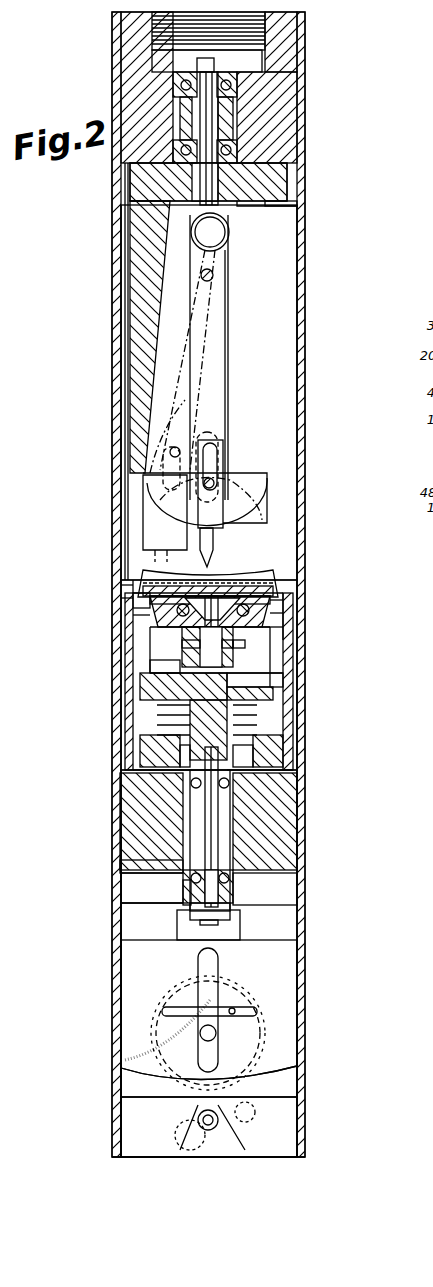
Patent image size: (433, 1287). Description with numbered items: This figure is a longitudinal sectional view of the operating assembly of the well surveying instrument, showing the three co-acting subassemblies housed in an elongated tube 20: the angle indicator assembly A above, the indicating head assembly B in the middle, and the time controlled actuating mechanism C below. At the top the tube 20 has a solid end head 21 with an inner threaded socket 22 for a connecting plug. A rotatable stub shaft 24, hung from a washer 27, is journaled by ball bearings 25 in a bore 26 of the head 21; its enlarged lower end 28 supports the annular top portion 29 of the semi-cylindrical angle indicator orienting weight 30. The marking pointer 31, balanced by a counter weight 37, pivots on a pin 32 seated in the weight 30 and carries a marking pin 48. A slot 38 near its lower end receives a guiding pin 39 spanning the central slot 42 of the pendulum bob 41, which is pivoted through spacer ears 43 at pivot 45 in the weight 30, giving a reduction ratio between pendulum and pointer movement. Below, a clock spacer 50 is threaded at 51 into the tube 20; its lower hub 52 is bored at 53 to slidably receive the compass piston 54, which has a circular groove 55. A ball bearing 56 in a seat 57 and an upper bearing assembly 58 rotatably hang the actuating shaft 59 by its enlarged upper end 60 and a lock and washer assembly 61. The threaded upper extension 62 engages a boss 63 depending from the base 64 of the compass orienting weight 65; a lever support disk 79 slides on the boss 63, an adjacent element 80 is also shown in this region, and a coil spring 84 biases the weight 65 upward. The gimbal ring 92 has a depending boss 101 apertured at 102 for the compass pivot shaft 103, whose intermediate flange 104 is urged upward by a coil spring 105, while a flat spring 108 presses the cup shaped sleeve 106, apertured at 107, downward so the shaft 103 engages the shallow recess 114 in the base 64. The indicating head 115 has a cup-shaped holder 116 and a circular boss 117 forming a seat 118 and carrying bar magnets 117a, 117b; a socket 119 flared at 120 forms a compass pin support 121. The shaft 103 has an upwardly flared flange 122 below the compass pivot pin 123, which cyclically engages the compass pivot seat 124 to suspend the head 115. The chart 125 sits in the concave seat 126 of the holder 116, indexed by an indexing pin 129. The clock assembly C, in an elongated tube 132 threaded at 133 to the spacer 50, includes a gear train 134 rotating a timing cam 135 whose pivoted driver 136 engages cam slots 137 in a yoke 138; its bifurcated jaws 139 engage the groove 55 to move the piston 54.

The elongated tube 20 is at (112, 265).
The end head 21 is at (305, 122).
The inner threaded socket 22 is at (305, 45).
The rotatable stub shaft 24 is at (305, 95).
The ball bearings 25 is at (343, 157).
The bore 26 is at (305, 138).
The washer 27 is at (197, 65).
The enlarged lower end 28 is at (305, 203).
The annular top portion 29 is at (305, 183).
The angle indicator orienting weight 30 is at (128, 185).
The marking pointer 31 is at (228, 380).
The pin 32 is at (214, 276).
The counter weight 37 is at (228, 232).
The vertically extending slot 38 is at (216, 465).
The pointer guiding pin 39 is at (212, 482).
The pendulum bob 41 is at (150, 483).
The central slot 42 is at (240, 510).
The spacer ears 43 is at (214, 448).
The pivot 45 is at (218, 440).
The marking pin 48 is at (200, 546).
The clock spacer 50 is at (305, 755).
The threaded connection 51 is at (305, 700).
The lower hub 52 is at (305, 838).
The central bore 53 is at (305, 857).
The compass piston 54 is at (305, 820).
The circular groove 55 is at (235, 912).
The ball bearing 56 is at (240, 883).
The seat 57 is at (305, 885).
The upper bearing assembly 58 is at (305, 795).
The actuating shaft 59 is at (180, 810).
The enlarged upper end 60 is at (305, 783).
The lock and washer assembly 61 is at (245, 932).
The threaded upper extension 62 is at (305, 770).
The boss 63 is at (165, 785).
The base 64 is at (150, 712).
The compass orienting weight 65 is at (150, 668).
The lever support disk 79 is at (305, 730).
The spring seat 80 is at (305, 745).
The coil spring 84 is at (305, 712).
The gimbal ring 92 is at (305, 605).
The depending boss 101 is at (305, 617).
The aperture 102 is at (305, 645).
The compass pivot shaft 103 is at (140, 700).
The intermediate flange 104 is at (182, 640).
The coil spring 105 is at (305, 630).
The cup shaped sleeve 106 is at (305, 662).
The aperture 107 is at (305, 678).
The flat spring 108 is at (150, 660).
The shallow recess 114 is at (157, 715).
The indicating head 115 is at (121, 570).
The cup-shaped holder 116 is at (112, 558).
The circular boss 117 is at (150, 627).
The bar magnet 117a is at (305, 600).
The bar magnet 117b is at (133, 618).
The gimbal and orienting weight seat 118 is at (75, 598).
The socket 119 is at (305, 575).
The flare 120 is at (305, 588).
The compass pin support 121 is at (133, 604).
The upwardly flared flange 122 is at (150, 598).
The compass pivot pin 123 is at (240, 580).
The compass pivot seat 124 is at (236, 570).
The calibrated chart 125 is at (270, 590).
The concave seat 126 is at (305, 560).
The indexing pin 129 is at (305, 552).
The elongated tube 132 is at (250, 1085).
The threaded attachment 133 is at (118, 838).
The clock controlled gear train 134 is at (150, 1130).
The timing cam 135 is at (260, 1030).
The pivoted driver 136 is at (255, 1012).
The cam slots 137 is at (210, 1000).
The yoke 138 is at (150, 925).
The bifurcated jaws 139 is at (150, 912).
The angle indicator assembly A is at (100, 400).
The indicating head assembly B is at (100, 743).
The time controlled actuating mechanism C is at (100, 1015).